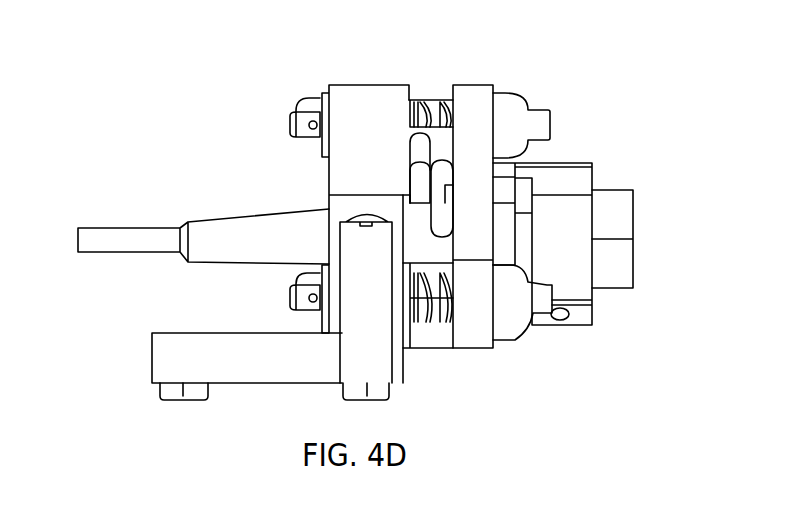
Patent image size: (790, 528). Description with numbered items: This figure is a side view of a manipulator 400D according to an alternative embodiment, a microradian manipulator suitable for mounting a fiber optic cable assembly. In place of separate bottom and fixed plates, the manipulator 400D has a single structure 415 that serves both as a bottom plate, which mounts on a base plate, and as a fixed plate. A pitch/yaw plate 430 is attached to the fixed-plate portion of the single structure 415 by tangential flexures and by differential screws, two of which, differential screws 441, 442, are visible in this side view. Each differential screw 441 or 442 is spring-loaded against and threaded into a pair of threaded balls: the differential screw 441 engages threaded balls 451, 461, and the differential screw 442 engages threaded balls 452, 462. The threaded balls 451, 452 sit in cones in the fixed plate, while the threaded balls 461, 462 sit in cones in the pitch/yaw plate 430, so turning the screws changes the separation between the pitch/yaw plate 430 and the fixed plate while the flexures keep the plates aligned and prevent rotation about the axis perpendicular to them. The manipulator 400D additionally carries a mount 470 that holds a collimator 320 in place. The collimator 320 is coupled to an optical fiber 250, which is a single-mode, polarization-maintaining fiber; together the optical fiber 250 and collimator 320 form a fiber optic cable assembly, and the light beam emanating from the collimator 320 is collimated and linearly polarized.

The manipulator 400D is at (196, 93).
The optical fiber 250 is at (127, 227).
The single structure 415 is at (200, 332).
The pitch/yaw plate 430 is at (476, 85).
The differential screw 441 is at (300, 307).
The differential screw 442 is at (306, 140).
The threaded ball 451 is at (507, 313).
The threaded ball 452 is at (527, 101).
The threaded ball 461 is at (300, 283).
The threaded ball 462 is at (305, 99).
The mount 470 is at (562, 163).
The collimator 320 is at (605, 288).